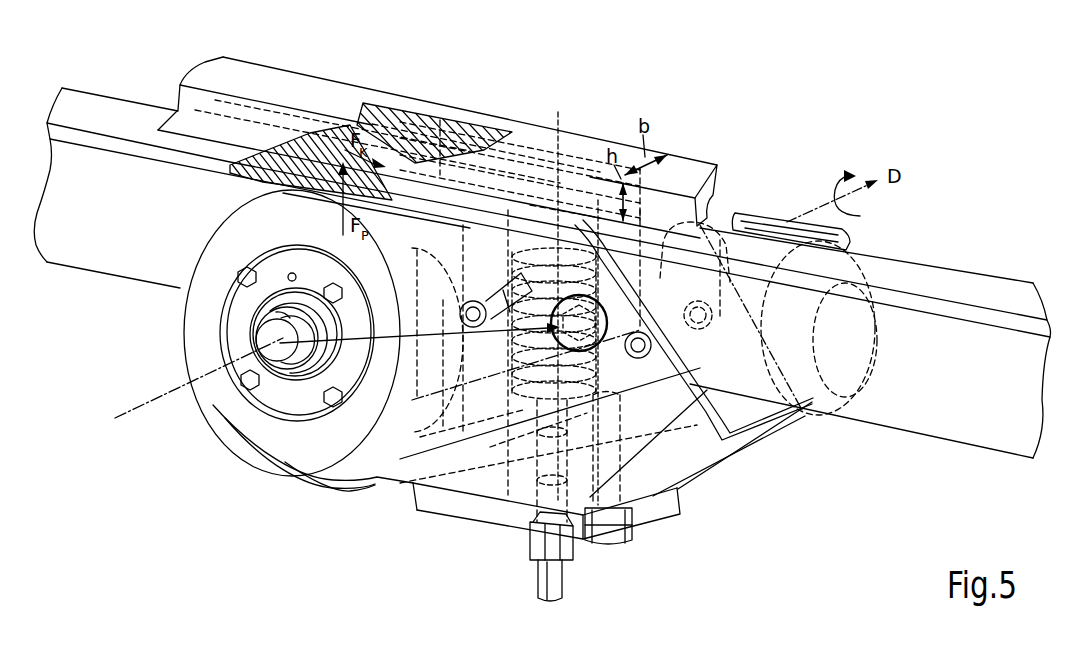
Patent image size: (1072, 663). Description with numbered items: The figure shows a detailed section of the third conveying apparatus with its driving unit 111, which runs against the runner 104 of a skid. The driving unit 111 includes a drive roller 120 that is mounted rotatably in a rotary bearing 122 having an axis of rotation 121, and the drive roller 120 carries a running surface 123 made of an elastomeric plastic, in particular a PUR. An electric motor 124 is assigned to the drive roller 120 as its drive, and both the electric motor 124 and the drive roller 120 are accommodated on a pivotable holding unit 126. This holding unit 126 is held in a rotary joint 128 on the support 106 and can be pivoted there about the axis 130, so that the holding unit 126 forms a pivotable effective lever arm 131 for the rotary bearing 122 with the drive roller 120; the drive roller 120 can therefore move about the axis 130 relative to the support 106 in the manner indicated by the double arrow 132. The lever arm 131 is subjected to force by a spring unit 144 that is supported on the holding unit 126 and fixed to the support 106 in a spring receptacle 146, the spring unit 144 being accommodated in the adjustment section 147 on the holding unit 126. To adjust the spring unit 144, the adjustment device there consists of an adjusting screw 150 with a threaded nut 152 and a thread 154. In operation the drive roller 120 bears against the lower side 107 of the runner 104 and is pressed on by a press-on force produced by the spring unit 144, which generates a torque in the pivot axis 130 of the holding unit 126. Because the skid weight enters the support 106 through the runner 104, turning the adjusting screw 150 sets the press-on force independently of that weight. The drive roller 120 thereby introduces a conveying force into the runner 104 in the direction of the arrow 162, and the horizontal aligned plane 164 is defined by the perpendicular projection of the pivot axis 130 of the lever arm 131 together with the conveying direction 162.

The runner 104 is at (205, 66).
The support 106 is at (926, 436).
The lower side 107 is at (240, 110).
The driving unit 111 is at (386, 552).
The drive roller 120 is at (248, 427).
The axis of rotation 121 is at (145, 400).
The rotary bearing 122 is at (310, 385).
The running surface 123 is at (333, 483).
The electric motor 124 is at (850, 258).
The pivotable holding unit 126 is at (750, 450).
The rotary joint 128 is at (695, 242).
The axis 130 is at (420, 400).
The effective lever arm 131 is at (400, 335).
The double arrow 132 is at (75, 452).
The spring unit 144 is at (563, 245).
The spring receptacle 146 is at (518, 516).
The adjustment section 147 is at (437, 508).
The adjusting screw 150 is at (562, 585).
The threaded nut 152 is at (567, 556).
The thread 154 is at (600, 527).
The arrow 162 is at (333, 150).
The horizontal aligned plane 164 is at (402, 108).